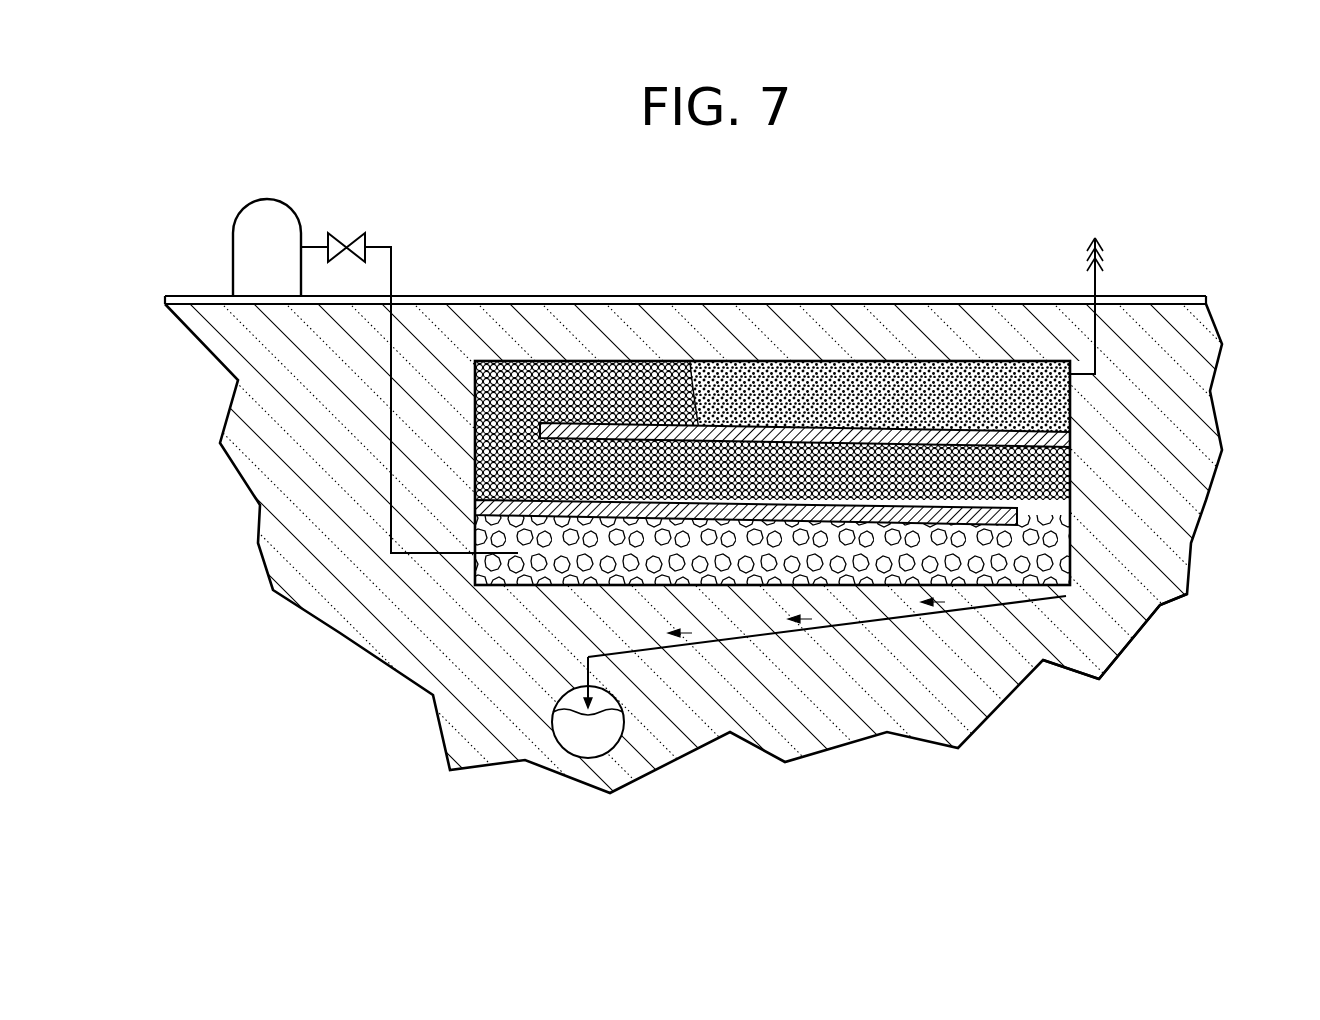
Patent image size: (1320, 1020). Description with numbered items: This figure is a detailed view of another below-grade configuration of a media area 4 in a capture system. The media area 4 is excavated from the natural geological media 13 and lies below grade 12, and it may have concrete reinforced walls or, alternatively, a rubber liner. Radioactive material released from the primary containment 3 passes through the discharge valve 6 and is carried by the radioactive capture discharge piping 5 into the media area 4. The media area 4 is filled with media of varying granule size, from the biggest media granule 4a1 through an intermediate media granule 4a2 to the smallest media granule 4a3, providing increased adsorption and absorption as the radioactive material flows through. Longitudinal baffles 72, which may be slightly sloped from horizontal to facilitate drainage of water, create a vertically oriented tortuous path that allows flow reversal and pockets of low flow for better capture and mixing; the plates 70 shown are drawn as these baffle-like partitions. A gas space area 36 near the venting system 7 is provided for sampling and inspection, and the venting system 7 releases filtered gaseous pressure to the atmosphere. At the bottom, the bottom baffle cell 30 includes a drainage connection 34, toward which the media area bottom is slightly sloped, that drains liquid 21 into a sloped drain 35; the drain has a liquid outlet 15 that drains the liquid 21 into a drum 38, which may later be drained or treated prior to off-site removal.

The primary containment 3 is at (278, 257).
The discharge valve 6 is at (353, 212).
The radioactive capture discharge piping 5 is at (393, 378).
The media area 4 is at (805, 474).
The biggest media granule 4a1 is at (488, 586).
The media granule 4a2 is at (1072, 481).
The smallest media granule 4a3 is at (817, 374).
The longitudinal baffles 72 is at (692, 361).
The gas space area 36 is at (1029, 370).
The venting system 7 is at (1102, 247).
The grade 12 is at (1157, 296).
The natural geological media 13 is at (1190, 482).
The bottom baffle cell 30 is at (1105, 600).
The drainage connection 34 is at (1127, 650).
The partition plate 70 is at (580, 584).
The sloped drain 35 is at (973, 620).
The liquid outlet 15 is at (606, 692).
The drum 38 is at (622, 742).
The liquid 21 is at (599, 750).